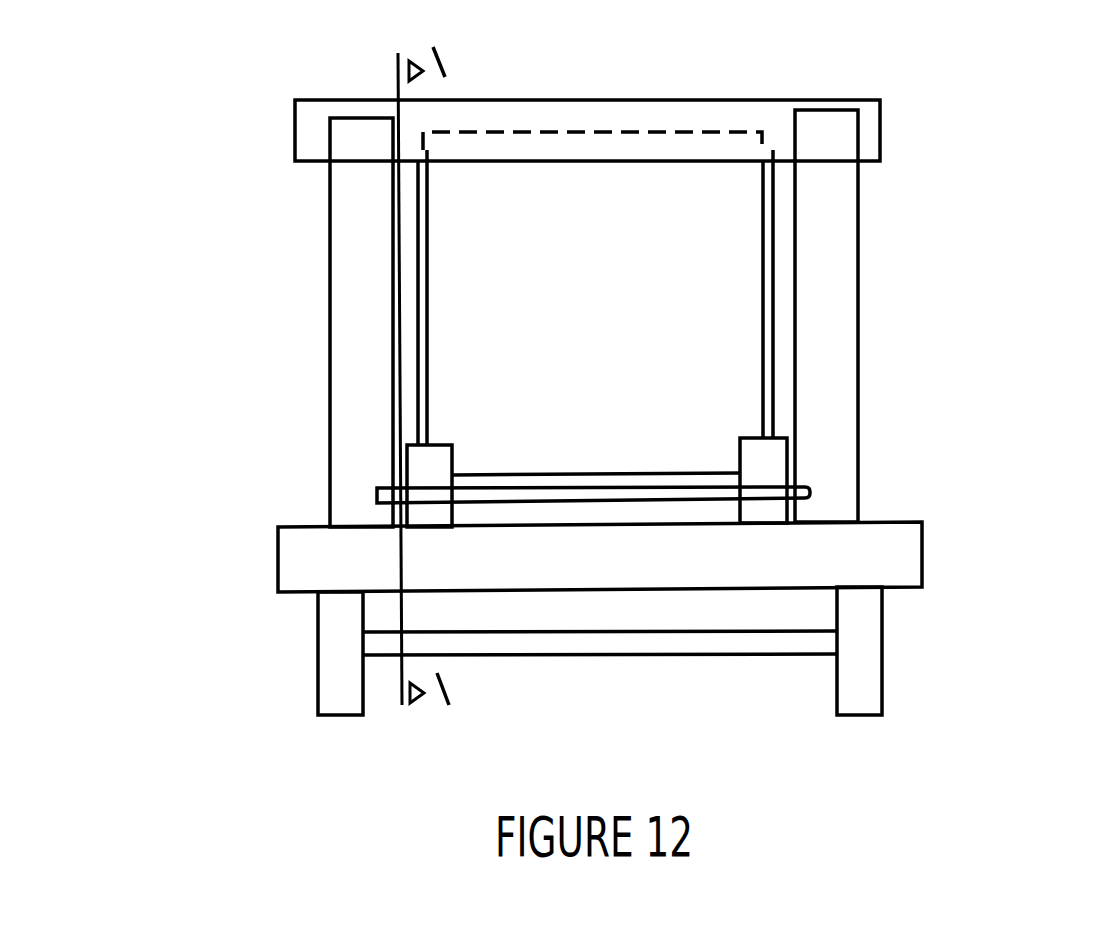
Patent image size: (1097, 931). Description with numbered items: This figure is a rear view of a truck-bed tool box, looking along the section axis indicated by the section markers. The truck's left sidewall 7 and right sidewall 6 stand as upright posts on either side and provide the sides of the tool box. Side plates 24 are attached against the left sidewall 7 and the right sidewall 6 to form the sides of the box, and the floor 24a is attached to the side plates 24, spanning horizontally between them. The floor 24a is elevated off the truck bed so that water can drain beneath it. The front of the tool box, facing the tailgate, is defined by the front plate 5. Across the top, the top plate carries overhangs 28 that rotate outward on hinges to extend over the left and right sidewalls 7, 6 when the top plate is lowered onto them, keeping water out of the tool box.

The front plate 5 is at (763, 297).
The right sidewall 6 is at (827, 373).
The left sidewall 7 is at (362, 384).
The side plates 24 is at (427, 290).
The floor 24a is at (810, 495).
The overhangs 28 is at (310, 137).